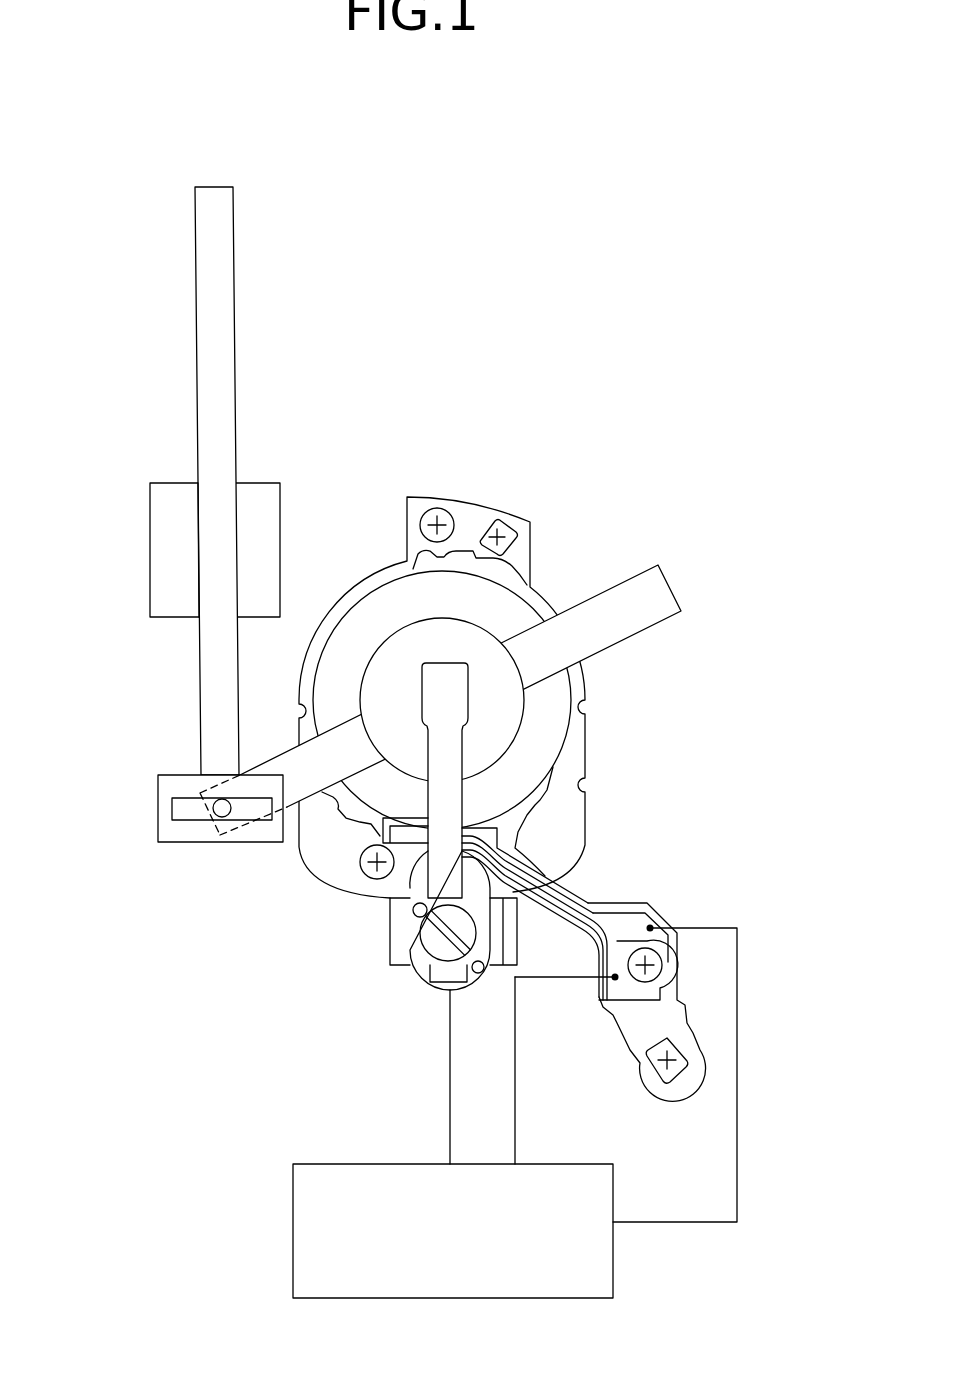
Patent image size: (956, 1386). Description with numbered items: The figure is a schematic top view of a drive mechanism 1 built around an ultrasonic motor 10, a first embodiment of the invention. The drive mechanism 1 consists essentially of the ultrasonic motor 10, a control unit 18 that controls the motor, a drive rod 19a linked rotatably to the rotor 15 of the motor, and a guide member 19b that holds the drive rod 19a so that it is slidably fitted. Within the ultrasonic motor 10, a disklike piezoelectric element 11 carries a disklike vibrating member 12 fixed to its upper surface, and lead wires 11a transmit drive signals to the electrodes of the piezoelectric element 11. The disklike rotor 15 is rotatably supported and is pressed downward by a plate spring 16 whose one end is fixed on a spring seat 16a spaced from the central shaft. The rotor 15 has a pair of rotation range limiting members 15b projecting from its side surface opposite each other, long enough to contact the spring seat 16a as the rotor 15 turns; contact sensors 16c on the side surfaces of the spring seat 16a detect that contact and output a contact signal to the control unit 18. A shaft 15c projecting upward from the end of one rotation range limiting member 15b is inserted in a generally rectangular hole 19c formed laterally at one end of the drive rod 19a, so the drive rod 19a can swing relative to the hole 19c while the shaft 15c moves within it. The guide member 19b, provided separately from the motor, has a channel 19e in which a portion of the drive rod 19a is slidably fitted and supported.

The drive mechanism 1 is at (538, 342).
The ultrasonic motor 10 is at (612, 746).
The piezoelectric element 11 is at (512, 622).
The vibrating member 12 is at (512, 622).
The lead wires 11a is at (610, 902).
The rotor 15 is at (403, 663).
The rotation range limiting members 15b is at (652, 598).
The shaft 15c is at (222, 817).
The plate spring 16 is at (443, 833).
The spring seat 16a is at (423, 983).
The contact sensors 16c is at (390, 950).
The control unit 18 is at (615, 1265).
The drive rod 19a is at (217, 303).
The guide member 19b is at (172, 550).
The hole 19c is at (183, 814).
The channel 19e is at (200, 520).